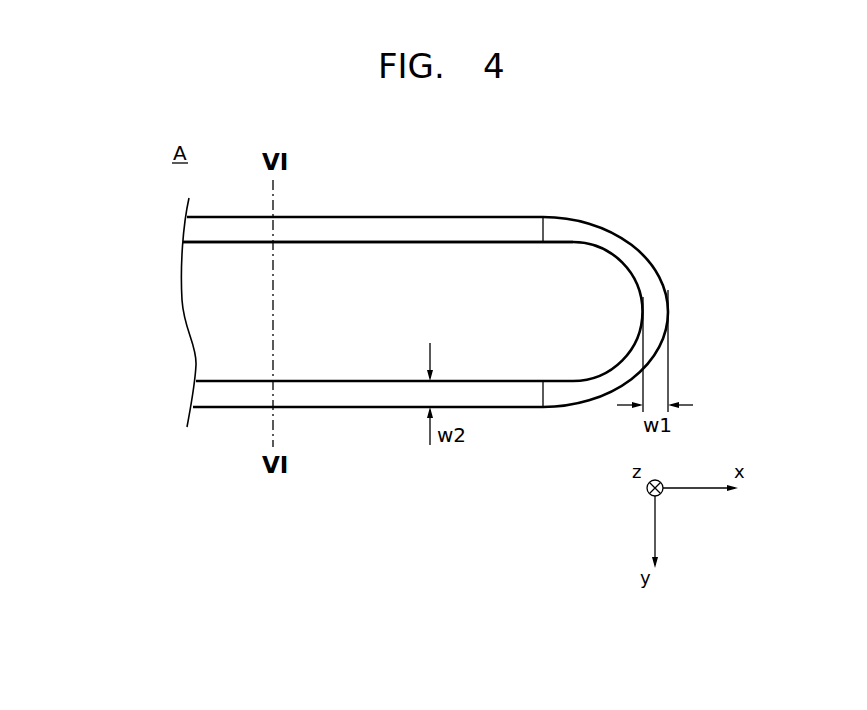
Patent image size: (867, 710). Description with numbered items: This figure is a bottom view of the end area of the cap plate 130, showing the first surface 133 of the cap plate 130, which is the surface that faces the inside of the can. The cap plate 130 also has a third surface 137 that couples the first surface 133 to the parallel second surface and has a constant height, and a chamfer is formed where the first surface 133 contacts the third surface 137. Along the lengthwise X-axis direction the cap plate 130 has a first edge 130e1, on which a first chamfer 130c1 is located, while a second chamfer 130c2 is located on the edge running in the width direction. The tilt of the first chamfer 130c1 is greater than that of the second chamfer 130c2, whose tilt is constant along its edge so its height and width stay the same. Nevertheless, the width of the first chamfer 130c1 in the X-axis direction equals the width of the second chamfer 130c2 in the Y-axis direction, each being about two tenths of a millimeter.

The cap plate 130 is at (427, 280).
The first surface 133 is at (343, 303).
The second chamfer 130c2 is at (378, 187).
The third surface 137 is at (493, 215).
The first edge 130e1 is at (661, 285).
The first chamfer 130c1 is at (652, 298).